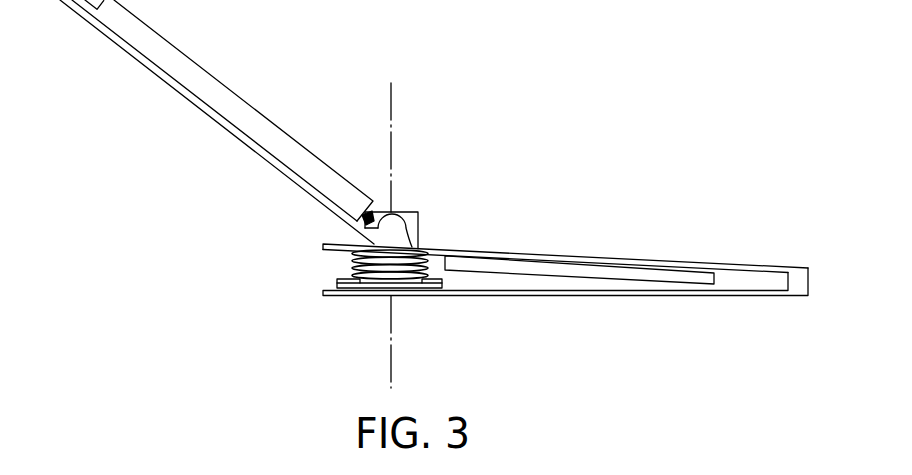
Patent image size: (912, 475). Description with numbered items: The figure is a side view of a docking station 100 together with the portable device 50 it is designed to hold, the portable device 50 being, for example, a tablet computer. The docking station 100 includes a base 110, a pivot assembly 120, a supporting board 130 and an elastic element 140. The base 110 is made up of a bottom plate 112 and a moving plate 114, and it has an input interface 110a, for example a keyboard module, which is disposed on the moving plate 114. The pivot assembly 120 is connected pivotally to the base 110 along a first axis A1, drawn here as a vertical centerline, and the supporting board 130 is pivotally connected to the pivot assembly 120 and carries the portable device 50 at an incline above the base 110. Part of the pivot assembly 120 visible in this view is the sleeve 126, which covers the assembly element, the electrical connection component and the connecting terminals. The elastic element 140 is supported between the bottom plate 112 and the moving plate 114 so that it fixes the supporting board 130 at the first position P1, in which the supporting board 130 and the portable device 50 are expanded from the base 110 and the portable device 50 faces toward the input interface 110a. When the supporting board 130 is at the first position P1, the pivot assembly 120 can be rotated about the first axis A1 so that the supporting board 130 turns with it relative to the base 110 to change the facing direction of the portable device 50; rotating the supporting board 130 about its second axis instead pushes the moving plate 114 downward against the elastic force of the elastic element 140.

The portable device 50 is at (190, 68).
The supporting board 130 is at (149, 62).
The first position P1 is at (192, 133).
The first axis A1 is at (392, 101).
The docking station 100 is at (539, 281).
The base 110 is at (565, 259).
The input interface 110a is at (607, 277).
The bottom plate 112 is at (727, 297).
The moving plate 114 is at (727, 262).
The pivot assembly 120 is at (438, 206).
The sleeve 126 is at (430, 210).
The elastic element 140 is at (350, 269).